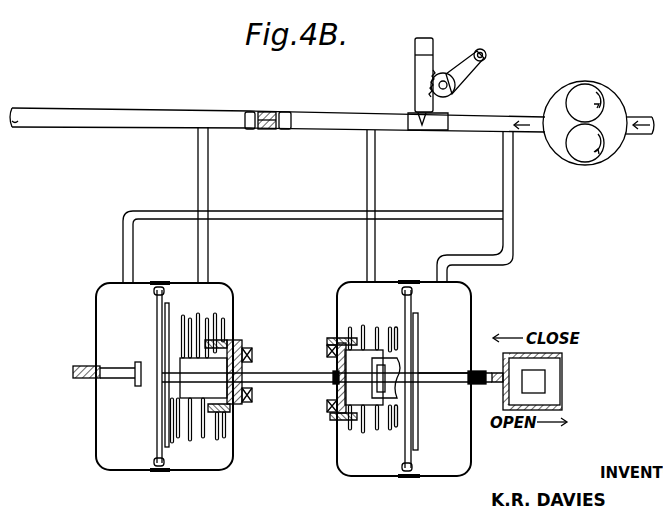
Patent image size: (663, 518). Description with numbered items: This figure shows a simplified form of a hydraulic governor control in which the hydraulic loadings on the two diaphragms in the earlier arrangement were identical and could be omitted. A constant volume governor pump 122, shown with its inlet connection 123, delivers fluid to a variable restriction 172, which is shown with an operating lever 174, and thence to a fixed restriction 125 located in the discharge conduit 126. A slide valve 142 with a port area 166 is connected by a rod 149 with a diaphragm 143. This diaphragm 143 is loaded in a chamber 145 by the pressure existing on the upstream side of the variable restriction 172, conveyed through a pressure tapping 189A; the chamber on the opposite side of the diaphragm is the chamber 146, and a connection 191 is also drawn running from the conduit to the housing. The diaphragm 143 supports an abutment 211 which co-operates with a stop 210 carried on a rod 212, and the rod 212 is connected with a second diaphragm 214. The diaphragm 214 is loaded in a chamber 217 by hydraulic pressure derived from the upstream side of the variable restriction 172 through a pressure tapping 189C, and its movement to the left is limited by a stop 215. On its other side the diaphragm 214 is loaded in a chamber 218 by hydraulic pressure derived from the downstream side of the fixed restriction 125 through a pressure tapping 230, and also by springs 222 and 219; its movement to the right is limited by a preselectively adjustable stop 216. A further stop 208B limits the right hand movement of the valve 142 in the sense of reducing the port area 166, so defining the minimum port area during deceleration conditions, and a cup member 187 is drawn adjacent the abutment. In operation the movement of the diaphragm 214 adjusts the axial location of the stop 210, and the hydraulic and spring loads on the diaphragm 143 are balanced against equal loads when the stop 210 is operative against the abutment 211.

The discharge conduit 126 is at (178, 118).
The fixed restriction 125 is at (263, 112).
The variable restriction 172 is at (418, 124).
The valve operating lever 174 is at (463, 71).
The constant volume governor pump 122 is at (573, 98).
The pump inlet 123 is at (632, 137).
The pressure tapping 230 is at (199, 190).
The branch pipe 191 is at (372, 182).
The pressure tapping 189C is at (268, 212).
The pressure tapping 189A is at (514, 228).
The chamber 217 is at (108, 420).
The chamber 218 is at (217, 292).
The diaphragm 214 is at (158, 420).
The stop 215 is at (118, 370).
The spring 219 is at (190, 437).
The spring 222 is at (212, 440).
The preselectively adjustable stop 216 is at (238, 352).
The rod 212 is at (290, 381).
The chamber 145 is at (456, 332).
The chamber 146 is at (384, 302).
The diaphragm 143 is at (415, 332).
The stop 208B is at (338, 346).
The stop 210 is at (336, 406).
The cup 187 is at (368, 428).
The abutment 211 is at (396, 430).
The rod 149 is at (445, 386).
The slide valve 142 is at (563, 357).
The port area 166 is at (545, 382).